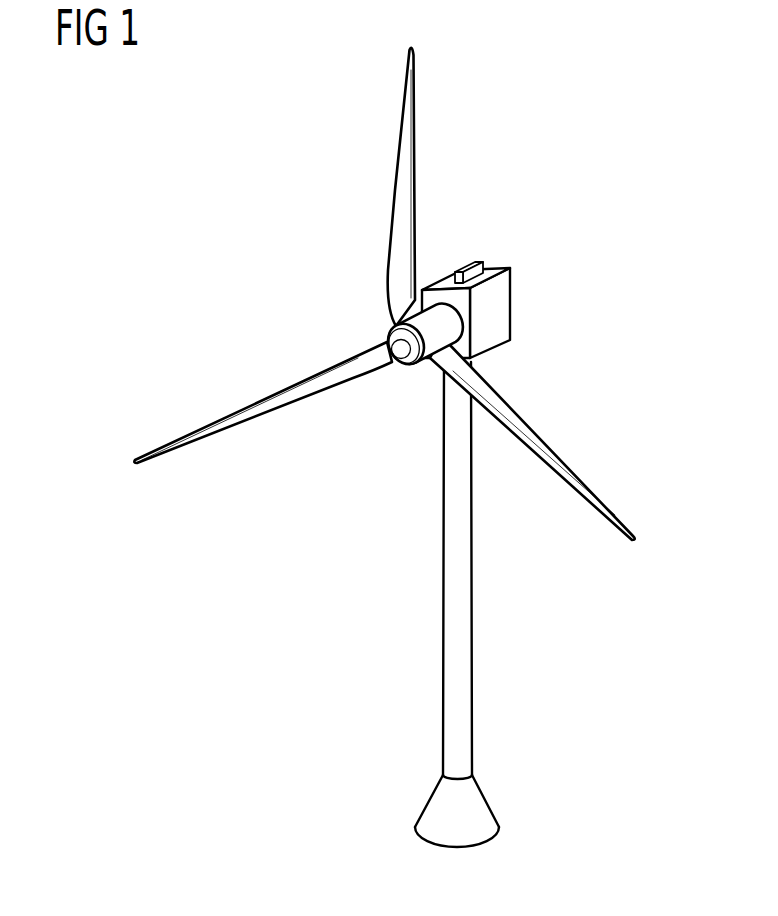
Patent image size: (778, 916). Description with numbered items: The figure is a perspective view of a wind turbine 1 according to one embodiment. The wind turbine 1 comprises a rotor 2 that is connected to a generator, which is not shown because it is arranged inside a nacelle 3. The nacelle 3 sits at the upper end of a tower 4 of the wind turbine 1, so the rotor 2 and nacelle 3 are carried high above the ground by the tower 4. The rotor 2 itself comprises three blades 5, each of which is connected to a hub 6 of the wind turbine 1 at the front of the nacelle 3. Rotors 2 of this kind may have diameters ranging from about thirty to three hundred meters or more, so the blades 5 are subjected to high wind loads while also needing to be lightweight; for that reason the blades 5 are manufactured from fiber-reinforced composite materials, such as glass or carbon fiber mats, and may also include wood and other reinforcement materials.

The wind turbine 1 is at (237, 196).
The rotor 2 is at (242, 395).
The nacelle 3 is at (500, 314).
The tower 4 is at (462, 723).
The blades 5 is at (403, 197).
The hub 6 is at (445, 330).